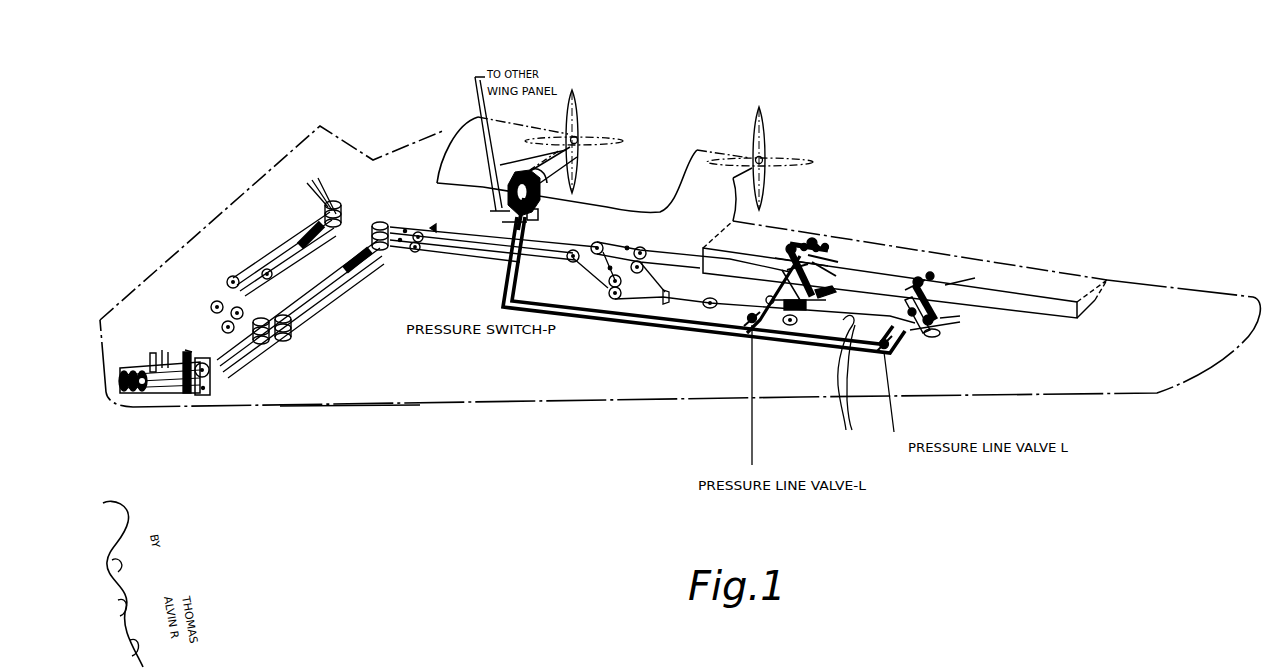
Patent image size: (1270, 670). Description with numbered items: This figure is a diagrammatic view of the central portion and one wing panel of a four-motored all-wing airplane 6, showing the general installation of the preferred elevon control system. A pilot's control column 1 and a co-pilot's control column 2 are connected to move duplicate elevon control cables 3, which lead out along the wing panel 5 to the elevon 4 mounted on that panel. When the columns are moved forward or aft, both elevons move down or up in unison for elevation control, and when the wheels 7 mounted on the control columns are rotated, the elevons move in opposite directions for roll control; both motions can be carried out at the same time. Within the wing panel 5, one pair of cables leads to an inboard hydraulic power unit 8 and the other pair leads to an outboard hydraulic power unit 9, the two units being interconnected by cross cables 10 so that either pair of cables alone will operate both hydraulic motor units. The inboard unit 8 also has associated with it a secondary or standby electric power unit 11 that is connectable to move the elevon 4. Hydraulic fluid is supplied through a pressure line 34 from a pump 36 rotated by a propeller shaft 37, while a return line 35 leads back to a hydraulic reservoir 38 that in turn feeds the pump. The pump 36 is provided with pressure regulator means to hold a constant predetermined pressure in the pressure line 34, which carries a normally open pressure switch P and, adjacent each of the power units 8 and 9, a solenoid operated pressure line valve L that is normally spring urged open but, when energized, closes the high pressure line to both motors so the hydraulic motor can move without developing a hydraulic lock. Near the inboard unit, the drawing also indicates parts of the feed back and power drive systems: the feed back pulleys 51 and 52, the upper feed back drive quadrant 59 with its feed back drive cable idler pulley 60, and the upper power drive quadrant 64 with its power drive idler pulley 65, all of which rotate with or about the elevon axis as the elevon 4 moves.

The pilot's control column 1 is at (200, 392).
The co-pilot's control column 2 is at (152, 353).
The elevon control cables 3 is at (330, 290).
The elevon 4 is at (1088, 306).
The wing panel 5 is at (680, 262).
The all-wing airplane 6 is at (349, 407).
The wheel 7 is at (187, 350).
The inboard hydraulic power unit 8 is at (823, 258).
The outboard hydraulic power unit 9 is at (960, 292).
The cross cables 10 is at (853, 380).
The electric power unit 11 is at (812, 240).
The pressure line 34 is at (667, 322).
The return line 35 is at (590, 318).
The pump 36 is at (405, 322).
The propeller shaft 37 is at (547, 150).
The hydraulic reservoir 38 is at (547, 183).
The feed back pulley 51 is at (787, 270).
The aft feed back pulley 52 is at (835, 275).
The upper feed back drive quadrant 59 is at (828, 243).
The feed back drive cable idler pulley 60 is at (837, 260).
The upper power drive quadrant 64 is at (816, 246).
The power drive idler pulley 65 is at (810, 246).